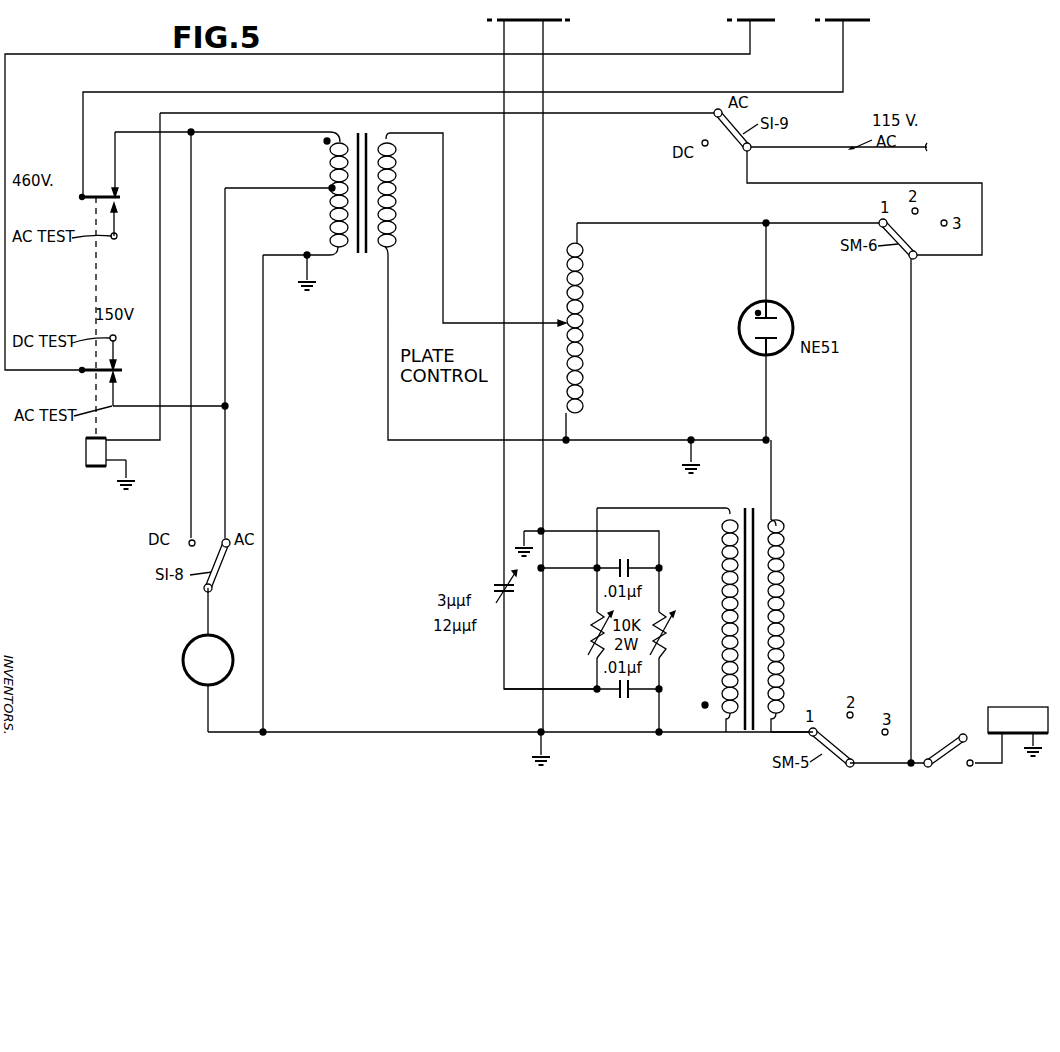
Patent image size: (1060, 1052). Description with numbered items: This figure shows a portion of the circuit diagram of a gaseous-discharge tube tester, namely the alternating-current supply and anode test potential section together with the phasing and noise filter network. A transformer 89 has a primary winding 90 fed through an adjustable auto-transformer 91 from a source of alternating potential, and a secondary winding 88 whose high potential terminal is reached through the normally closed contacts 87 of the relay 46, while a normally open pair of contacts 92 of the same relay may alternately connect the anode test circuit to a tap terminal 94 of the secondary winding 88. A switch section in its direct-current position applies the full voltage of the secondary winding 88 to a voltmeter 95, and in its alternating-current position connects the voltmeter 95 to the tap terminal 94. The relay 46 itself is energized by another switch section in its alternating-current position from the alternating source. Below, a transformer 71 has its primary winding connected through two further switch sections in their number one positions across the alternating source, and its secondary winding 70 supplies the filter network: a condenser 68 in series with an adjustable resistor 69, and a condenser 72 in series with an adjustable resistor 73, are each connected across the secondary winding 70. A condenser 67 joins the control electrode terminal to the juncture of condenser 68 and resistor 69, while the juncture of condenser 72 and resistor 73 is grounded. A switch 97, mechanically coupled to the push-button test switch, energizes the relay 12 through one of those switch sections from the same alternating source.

The relay 12 is at (996, 707).
The relay 46 is at (86, 451).
The condenser 67 is at (498, 587).
The condenser 68 is at (618, 692).
The adjustable resistor 69 is at (592, 633).
The secondary winding 70 is at (724, 604).
The transformer 71 is at (742, 734).
The condenser 72 is at (616, 565).
The adjustable resistor 73 is at (666, 633).
The normally closed contacts 87 is at (118, 196).
The secondary winding 88 is at (329, 161).
The transformer 89 is at (358, 140).
The primary winding 90 is at (392, 160).
The adjustable auto-transformer 91 is at (583, 367).
The normally open contacts 92 is at (110, 386).
The tap terminal 94 is at (332, 187).
The voltmeter 95 is at (183, 660).
The switch 97 is at (955, 738).